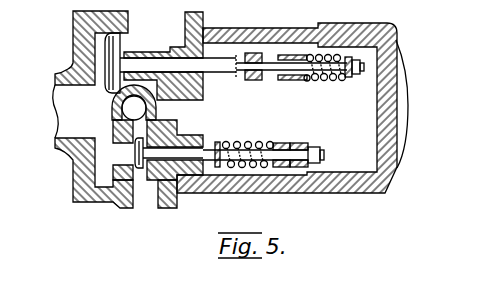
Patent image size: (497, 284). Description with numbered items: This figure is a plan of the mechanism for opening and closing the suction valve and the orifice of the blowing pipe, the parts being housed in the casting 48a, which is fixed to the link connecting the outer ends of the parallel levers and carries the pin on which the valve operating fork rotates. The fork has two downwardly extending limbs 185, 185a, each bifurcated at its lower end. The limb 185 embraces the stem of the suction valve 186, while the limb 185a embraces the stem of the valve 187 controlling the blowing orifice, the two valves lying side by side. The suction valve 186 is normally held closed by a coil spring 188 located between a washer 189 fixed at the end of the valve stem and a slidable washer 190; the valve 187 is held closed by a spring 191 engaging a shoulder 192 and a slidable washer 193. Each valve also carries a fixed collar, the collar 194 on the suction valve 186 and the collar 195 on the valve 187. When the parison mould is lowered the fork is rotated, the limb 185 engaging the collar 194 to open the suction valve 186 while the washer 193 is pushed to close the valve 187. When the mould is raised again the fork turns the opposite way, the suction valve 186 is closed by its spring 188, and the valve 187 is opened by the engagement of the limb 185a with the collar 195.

The casting 48a is at (399, 105).
The limb 185 is at (290, 81).
The limb 185a is at (298, 167).
The suction valve 186 is at (124, 50).
The valve 187 is at (157, 152).
The coil spring 188 is at (340, 80).
The washer 189 is at (351, 78).
The slidable washer 190 is at (305, 82).
The spring 191 is at (233, 145).
The shoulder 192 is at (217, 167).
The slidable washer 193 is at (279, 167).
The fixed collar 194 is at (250, 81).
The fixed collar 195 is at (313, 146).